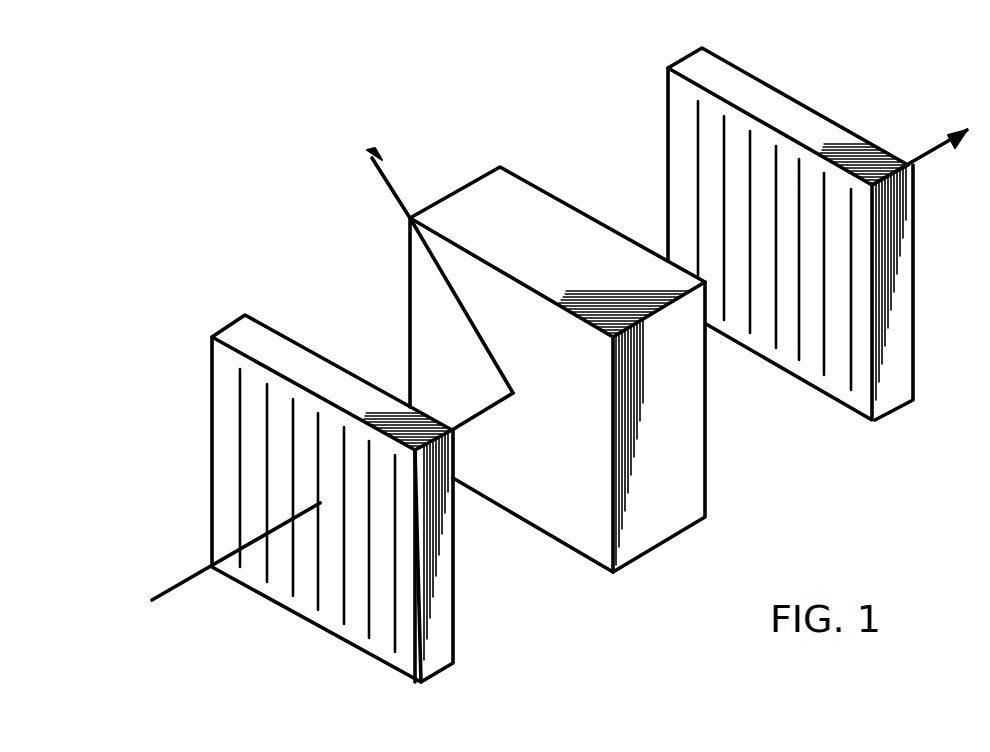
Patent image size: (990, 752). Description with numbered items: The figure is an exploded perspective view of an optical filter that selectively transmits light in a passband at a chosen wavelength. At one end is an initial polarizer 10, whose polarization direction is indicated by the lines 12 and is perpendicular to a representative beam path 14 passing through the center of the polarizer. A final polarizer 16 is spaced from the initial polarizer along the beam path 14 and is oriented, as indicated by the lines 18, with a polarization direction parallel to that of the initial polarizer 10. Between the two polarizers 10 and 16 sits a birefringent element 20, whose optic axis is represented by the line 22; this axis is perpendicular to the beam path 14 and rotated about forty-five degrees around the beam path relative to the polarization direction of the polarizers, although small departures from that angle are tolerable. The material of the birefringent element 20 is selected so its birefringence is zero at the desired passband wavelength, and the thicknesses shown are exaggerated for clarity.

The initial polarizer 10 is at (254, 330).
The lines 12 is at (395, 635).
The beam path 14 is at (190, 583).
The final polarizer 16 is at (683, 66).
The lines 18 is at (853, 370).
The birefringent element 20 is at (463, 194).
The line representing the optic axis 22 is at (393, 195).